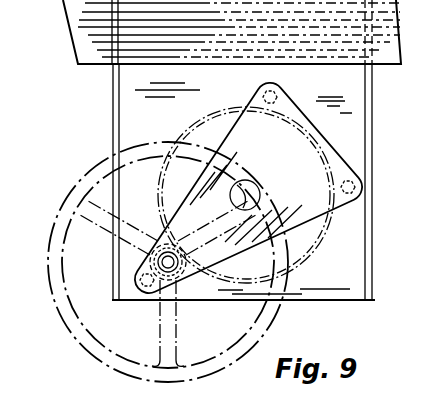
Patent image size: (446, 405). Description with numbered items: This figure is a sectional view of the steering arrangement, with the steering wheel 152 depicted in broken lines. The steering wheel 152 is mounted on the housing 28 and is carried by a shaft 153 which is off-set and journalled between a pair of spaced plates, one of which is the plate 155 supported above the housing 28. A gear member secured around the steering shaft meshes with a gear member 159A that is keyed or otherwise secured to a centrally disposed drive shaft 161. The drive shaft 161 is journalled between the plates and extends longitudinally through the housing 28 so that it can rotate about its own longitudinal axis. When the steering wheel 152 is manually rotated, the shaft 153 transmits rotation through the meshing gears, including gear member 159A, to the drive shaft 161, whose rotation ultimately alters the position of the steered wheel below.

The housing 28 is at (113, 128).
The steering wheel 152 is at (88, 338).
The shaft 153 is at (182, 278).
The plate 155 is at (342, 166).
The gear member 159A is at (295, 250).
The drive shaft 161 is at (247, 190).